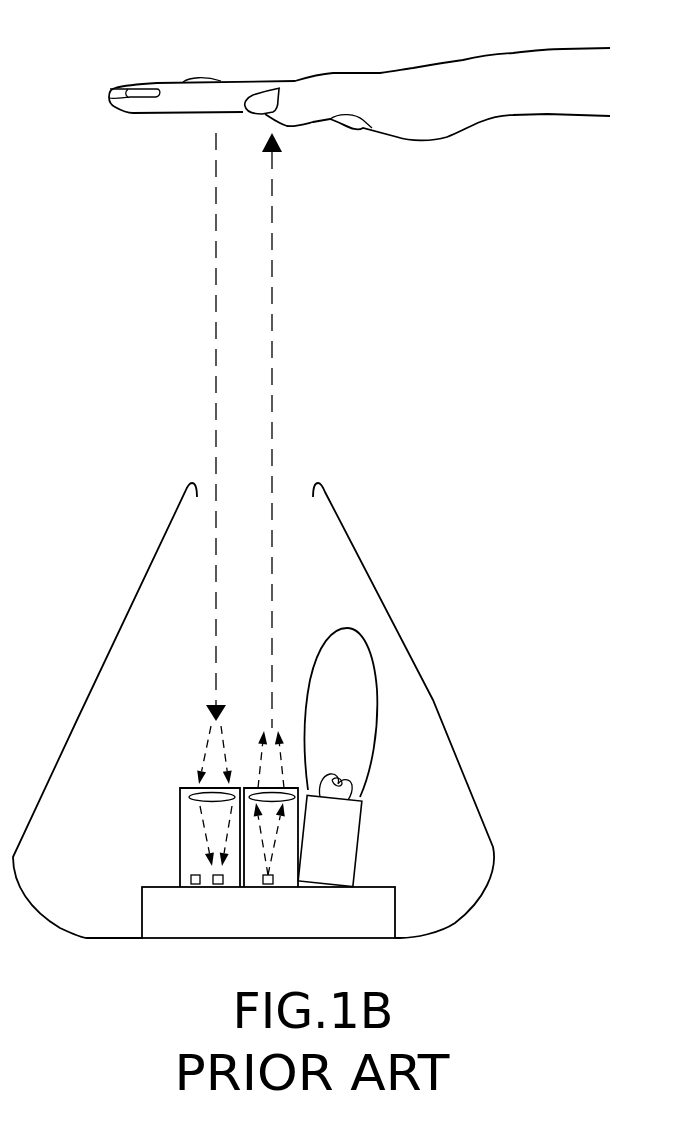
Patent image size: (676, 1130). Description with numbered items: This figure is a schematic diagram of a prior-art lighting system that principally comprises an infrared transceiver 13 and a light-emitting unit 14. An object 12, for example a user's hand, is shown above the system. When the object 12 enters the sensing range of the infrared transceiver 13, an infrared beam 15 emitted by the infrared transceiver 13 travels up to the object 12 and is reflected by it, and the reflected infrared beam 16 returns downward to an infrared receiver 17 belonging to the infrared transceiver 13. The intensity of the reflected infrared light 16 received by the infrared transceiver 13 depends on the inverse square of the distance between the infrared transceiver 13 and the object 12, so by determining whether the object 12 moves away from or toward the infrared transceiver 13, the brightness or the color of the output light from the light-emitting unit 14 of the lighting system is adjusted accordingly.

The object 12 is at (514, 68).
The infrared transceiver 13 is at (180, 810).
The light-emitting unit 14 is at (353, 720).
The infrared beam 15 is at (272, 348).
The reflected infrared beam 16 is at (217, 357).
The infrared receiver 17 is at (207, 876).